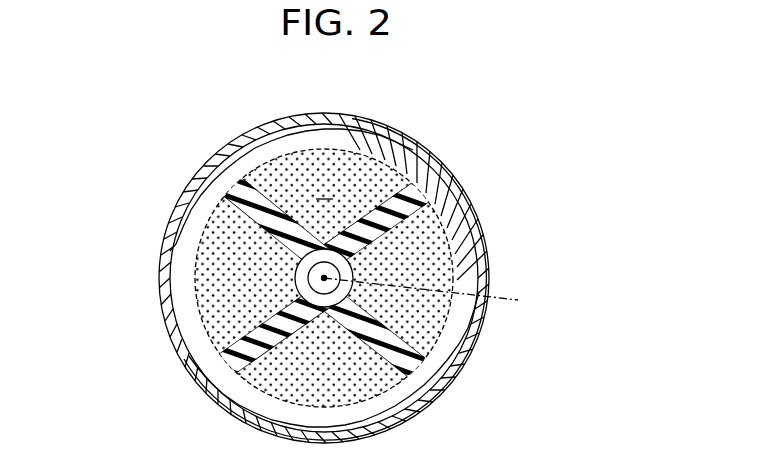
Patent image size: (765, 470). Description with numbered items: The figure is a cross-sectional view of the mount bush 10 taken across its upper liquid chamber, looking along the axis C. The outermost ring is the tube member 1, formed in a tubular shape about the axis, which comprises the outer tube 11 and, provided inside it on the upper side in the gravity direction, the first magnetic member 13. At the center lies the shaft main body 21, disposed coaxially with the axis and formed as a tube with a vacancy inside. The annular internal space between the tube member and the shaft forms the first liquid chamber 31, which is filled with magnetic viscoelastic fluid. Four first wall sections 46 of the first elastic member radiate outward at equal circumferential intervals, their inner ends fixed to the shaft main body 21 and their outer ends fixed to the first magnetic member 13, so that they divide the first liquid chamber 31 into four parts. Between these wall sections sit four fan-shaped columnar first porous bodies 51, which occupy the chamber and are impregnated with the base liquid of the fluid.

The tube member 1 is at (178, 183).
The mount bush 10 is at (470, 118).
The outer tube 11 is at (222, 157).
The first magnetic member 13 is at (289, 140).
The first liquid chamber 31 is at (358, 165).
The first wall section 46 is at (390, 228).
The shaft main body 21 is at (310, 275).
The first porous body 51 is at (250, 410).